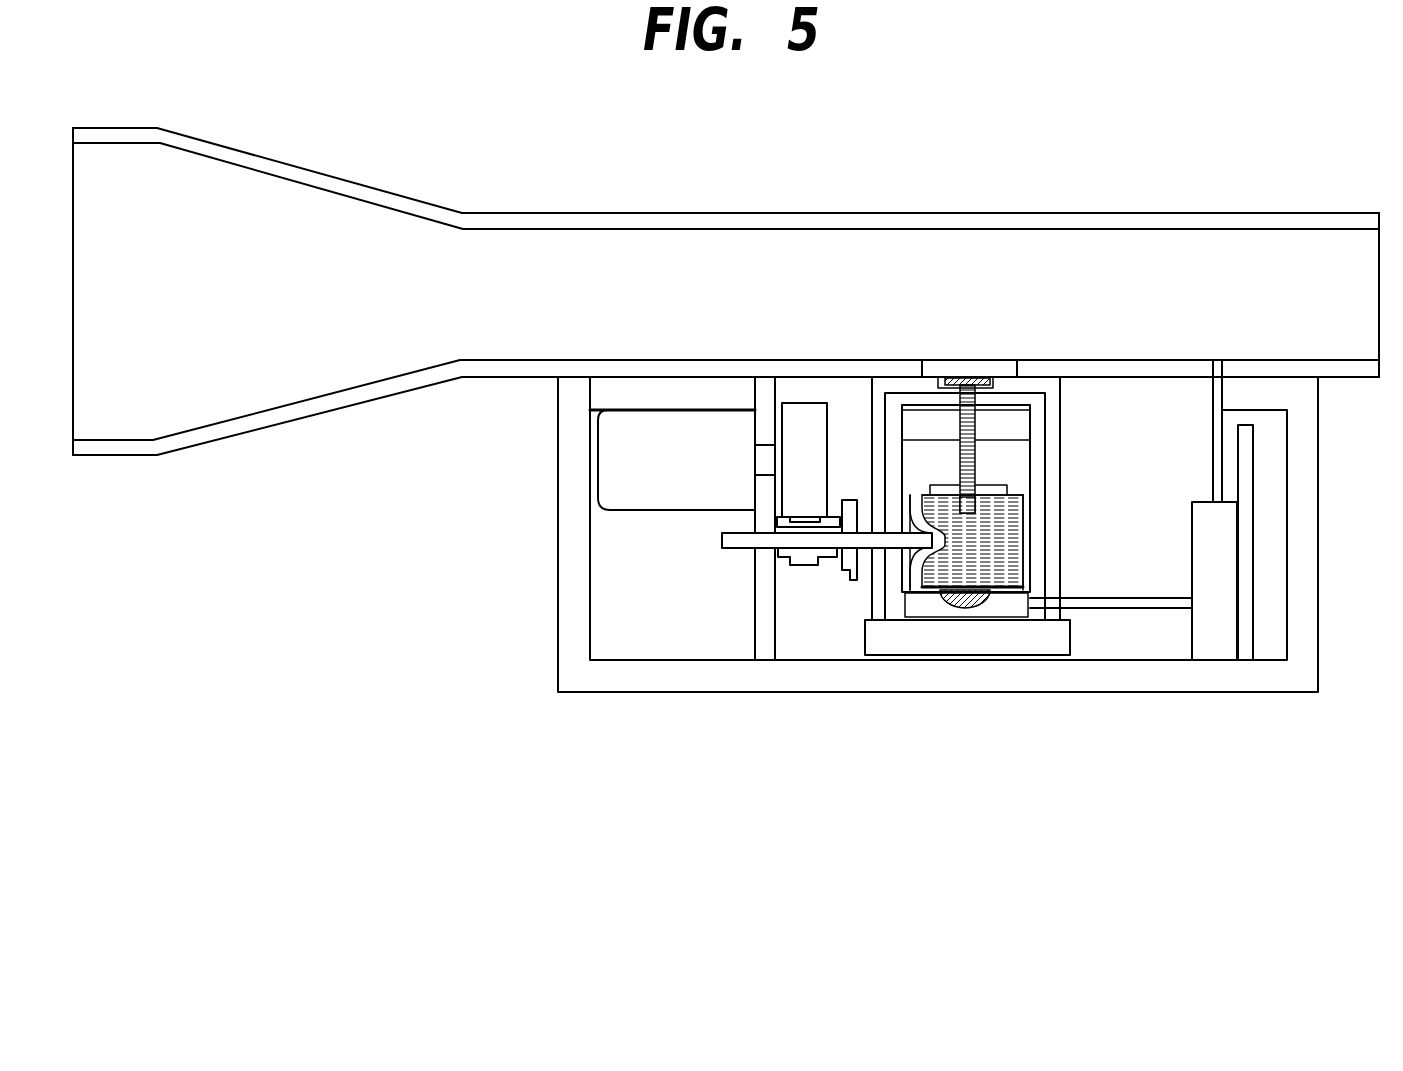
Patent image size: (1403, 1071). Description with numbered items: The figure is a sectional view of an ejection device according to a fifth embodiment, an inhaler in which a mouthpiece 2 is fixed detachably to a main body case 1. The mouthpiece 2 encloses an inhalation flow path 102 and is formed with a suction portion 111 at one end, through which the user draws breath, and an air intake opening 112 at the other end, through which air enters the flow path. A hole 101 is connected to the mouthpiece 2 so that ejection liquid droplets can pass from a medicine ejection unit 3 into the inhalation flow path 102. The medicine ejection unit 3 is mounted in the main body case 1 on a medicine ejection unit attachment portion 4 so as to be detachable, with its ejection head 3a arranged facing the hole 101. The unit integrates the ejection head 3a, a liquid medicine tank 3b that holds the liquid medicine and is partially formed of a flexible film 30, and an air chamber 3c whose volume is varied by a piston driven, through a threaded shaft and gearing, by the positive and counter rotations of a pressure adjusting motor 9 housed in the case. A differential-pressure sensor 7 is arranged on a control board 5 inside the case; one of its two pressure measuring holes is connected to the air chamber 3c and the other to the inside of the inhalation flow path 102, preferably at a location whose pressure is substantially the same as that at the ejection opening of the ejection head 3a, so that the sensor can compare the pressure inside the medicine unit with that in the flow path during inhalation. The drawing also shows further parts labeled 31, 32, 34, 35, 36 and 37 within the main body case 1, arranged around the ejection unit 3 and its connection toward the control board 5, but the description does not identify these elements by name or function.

The main body case 1 is at (568, 673).
The mouthpiece 2 is at (177, 143).
The medicine ejection unit 3 is at (1059, 349).
The ejection head 3a is at (995, 378).
The liquid medicine tank 3b is at (1002, 603).
The air chamber 3c is at (1020, 537).
The medicine ejection unit attachment portion 4 is at (1045, 645).
The control board 5 is at (1247, 647).
The differential-pressure sensor 7 is at (1217, 647).
The pressure adjusting motor 9 is at (618, 447).
The flexible film 30 is at (992, 607).
The support block 31 is at (922, 580).
The push rod 32 is at (868, 540).
The lever 34 is at (802, 422).
The pivot bracket 35 is at (802, 520).
The stopper 36 is at (848, 580).
The partition wall 37 is at (767, 640).
The hole 101 is at (955, 368).
The inhalation flow path 102 is at (513, 307).
The suction portion 111 is at (162, 390).
The air intake opening 112 is at (1337, 262).